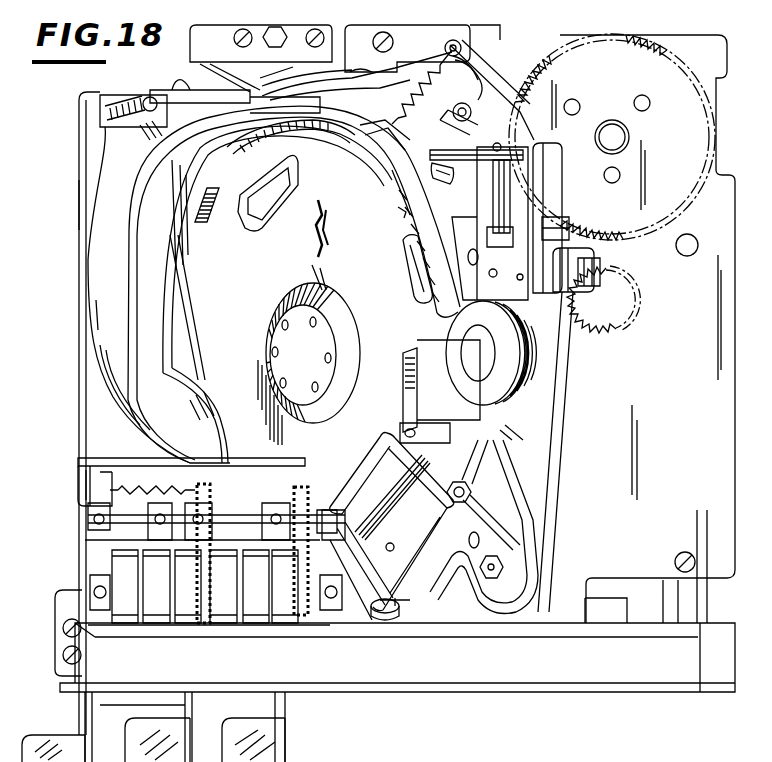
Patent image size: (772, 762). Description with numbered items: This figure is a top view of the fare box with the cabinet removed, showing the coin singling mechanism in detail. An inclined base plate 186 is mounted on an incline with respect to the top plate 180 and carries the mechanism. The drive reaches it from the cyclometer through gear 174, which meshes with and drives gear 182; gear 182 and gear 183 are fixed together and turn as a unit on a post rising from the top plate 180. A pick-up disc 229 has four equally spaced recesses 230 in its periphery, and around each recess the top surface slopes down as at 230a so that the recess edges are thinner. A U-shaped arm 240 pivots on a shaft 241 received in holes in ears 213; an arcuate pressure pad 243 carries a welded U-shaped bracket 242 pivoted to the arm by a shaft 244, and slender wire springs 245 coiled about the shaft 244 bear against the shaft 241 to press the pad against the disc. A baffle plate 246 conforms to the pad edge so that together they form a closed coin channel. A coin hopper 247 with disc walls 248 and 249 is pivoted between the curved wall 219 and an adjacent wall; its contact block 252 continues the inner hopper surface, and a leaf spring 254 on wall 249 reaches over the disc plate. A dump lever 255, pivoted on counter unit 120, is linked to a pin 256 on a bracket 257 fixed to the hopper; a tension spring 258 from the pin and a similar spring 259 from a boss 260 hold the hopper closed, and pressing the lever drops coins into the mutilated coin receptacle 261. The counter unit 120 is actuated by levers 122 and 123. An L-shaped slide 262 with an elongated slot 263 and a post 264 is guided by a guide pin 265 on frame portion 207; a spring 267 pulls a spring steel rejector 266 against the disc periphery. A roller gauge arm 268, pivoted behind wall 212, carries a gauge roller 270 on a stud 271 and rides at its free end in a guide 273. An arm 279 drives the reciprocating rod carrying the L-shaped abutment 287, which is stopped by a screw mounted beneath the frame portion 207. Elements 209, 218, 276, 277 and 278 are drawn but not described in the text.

The counter assembly 120 is at (259, 531).
The lever 122 is at (128, 725).
The lever 123 is at (228, 722).
The gear 174 is at (552, 56).
The top plate 180 is at (702, 328).
The gear 182 is at (610, 322).
The gear 183 is at (603, 297).
The base plate 186 is at (492, 474).
The frame portion 207 is at (548, 192).
The mounting plate 209 is at (499, 145).
The wall 212 is at (495, 540).
The ears 213 is at (464, 484).
The drum ring 218 is at (322, 128).
The curved wall 219 is at (252, 103).
The pick-up disc 229 is at (246, 333).
The recesses 230 is at (292, 168).
The sloping surface 230a is at (318, 187).
The U-shaped arm 240 is at (380, 462).
The shaft 241 is at (470, 541).
The U-shaped bracket 242 is at (404, 498).
The pressure pad 243 is at (402, 386).
The shaft 244 is at (360, 474).
The wire springs 245 is at (400, 604).
The baffle plate 246 is at (392, 425).
The coin hopper 247 is at (88, 250).
The disc wall 248 is at (240, 460).
The disc wall 249 is at (228, 108).
The contact block 252 is at (195, 228).
The leaf spring 254 is at (285, 132).
The dump lever 255 is at (50, 738).
The pin 256 is at (80, 478).
The bracket 257 is at (118, 458).
The tension spring 258 is at (166, 495).
The spring 259 is at (125, 98).
The boss 260 is at (184, 84).
The mutilated coin receptacle 261 is at (80, 207).
The L-shaped slide 262 is at (465, 122).
The elongated slot 263 is at (466, 108).
The post 264 is at (453, 46).
The guide pin 265 is at (392, 128).
The spring steel rejector 266 is at (400, 214).
The spring 267 is at (440, 62).
The roller gauge arm 268 is at (558, 408).
The gauge roller 270 is at (512, 362).
The stud 271 is at (486, 352).
The guide 273 is at (600, 272).
The roller flange 276 is at (535, 378).
The post 277 is at (505, 212).
The pawl 278 is at (556, 226).
The arm 279 is at (523, 157).
The L-shaped abutment 287 is at (381, 207).